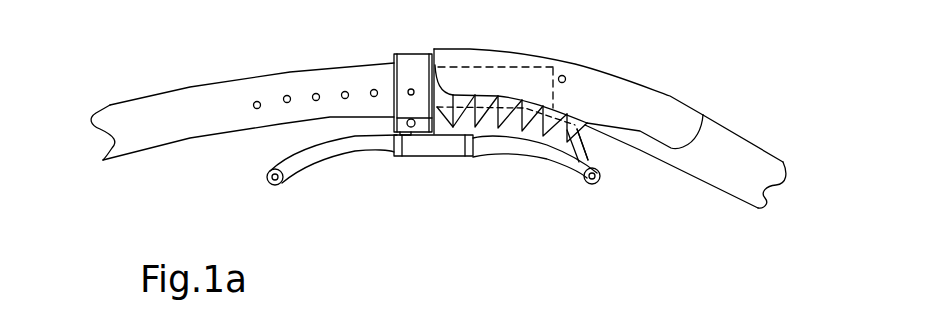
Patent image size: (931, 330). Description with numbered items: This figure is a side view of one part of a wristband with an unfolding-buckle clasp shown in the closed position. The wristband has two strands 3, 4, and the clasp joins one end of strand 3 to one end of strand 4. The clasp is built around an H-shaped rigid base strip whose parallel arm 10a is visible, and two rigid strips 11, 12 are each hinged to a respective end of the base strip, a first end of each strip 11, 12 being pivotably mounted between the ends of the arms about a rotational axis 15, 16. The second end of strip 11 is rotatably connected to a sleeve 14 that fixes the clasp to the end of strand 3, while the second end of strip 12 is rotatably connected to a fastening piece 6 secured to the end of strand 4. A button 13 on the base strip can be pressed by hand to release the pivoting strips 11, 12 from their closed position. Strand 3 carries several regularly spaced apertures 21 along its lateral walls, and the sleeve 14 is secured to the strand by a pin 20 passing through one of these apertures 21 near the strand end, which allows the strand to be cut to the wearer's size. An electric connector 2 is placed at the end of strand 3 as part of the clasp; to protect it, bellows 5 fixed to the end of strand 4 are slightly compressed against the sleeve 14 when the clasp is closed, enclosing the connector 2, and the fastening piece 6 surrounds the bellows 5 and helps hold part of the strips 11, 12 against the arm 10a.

The electric connector 2 is at (503, 70).
The strand 3 is at (197, 100).
The strand 4 is at (763, 158).
The bellows 5 is at (563, 161).
The fastening piece 6 is at (633, 90).
The arm 10a is at (512, 144).
The rigid strip 11 is at (345, 156).
The rigid strip 12 is at (580, 148).
The button 13 is at (422, 150).
The sleeve 14 is at (403, 67).
The rotational axis 15 is at (267, 180).
The rotational axis 16 is at (596, 182).
The pin 20 is at (413, 90).
The apertures 21 is at (345, 92).